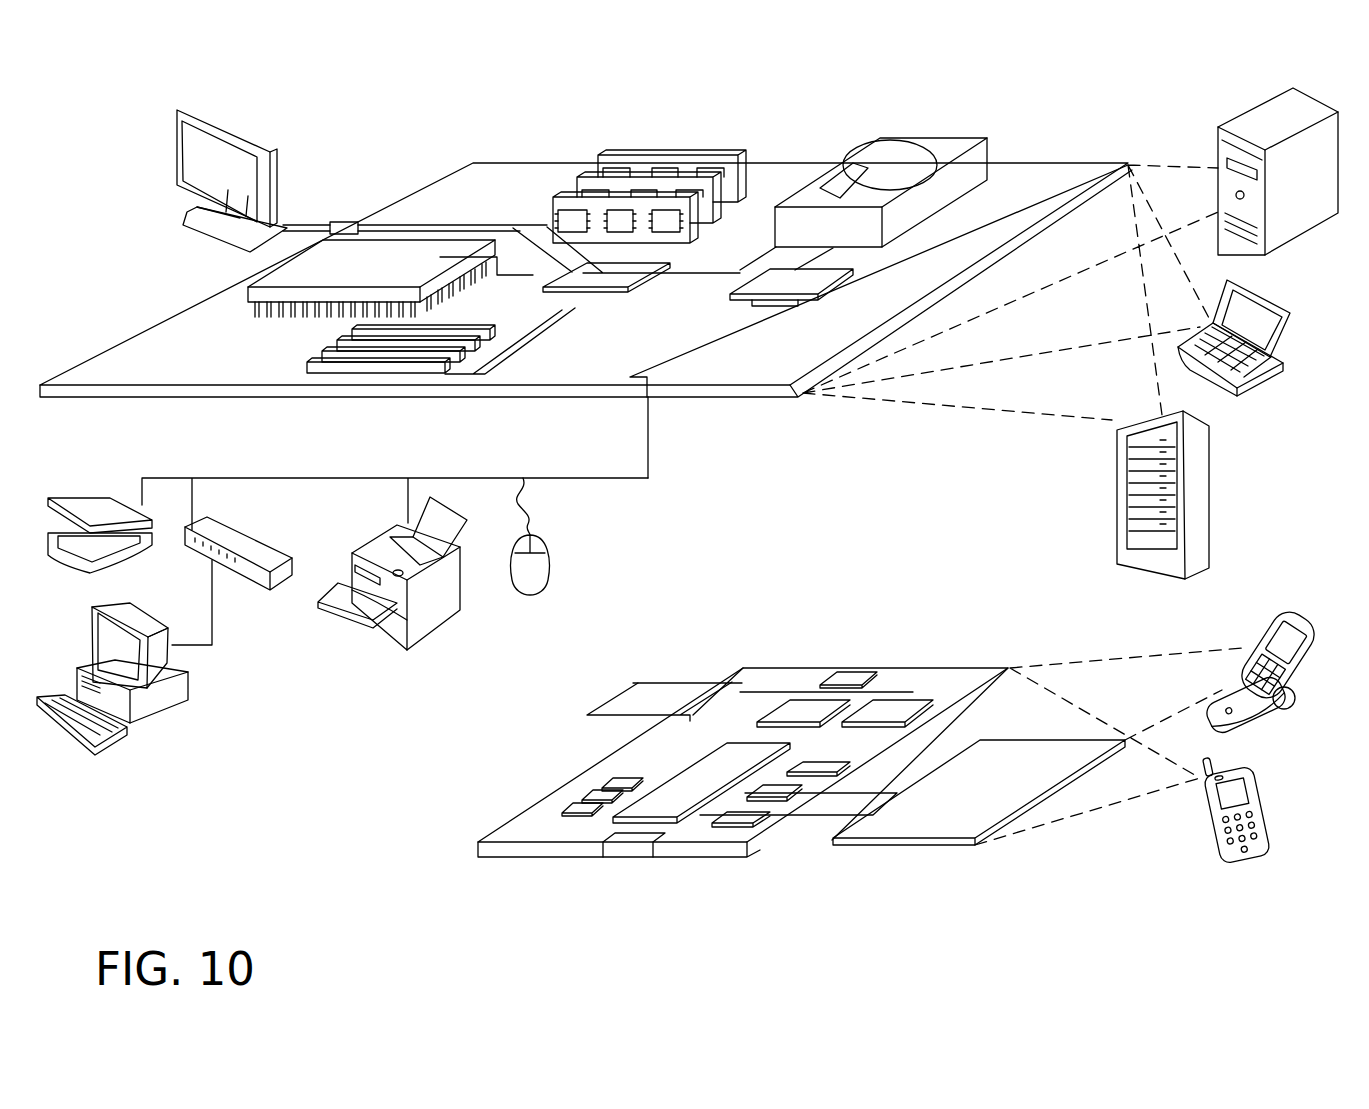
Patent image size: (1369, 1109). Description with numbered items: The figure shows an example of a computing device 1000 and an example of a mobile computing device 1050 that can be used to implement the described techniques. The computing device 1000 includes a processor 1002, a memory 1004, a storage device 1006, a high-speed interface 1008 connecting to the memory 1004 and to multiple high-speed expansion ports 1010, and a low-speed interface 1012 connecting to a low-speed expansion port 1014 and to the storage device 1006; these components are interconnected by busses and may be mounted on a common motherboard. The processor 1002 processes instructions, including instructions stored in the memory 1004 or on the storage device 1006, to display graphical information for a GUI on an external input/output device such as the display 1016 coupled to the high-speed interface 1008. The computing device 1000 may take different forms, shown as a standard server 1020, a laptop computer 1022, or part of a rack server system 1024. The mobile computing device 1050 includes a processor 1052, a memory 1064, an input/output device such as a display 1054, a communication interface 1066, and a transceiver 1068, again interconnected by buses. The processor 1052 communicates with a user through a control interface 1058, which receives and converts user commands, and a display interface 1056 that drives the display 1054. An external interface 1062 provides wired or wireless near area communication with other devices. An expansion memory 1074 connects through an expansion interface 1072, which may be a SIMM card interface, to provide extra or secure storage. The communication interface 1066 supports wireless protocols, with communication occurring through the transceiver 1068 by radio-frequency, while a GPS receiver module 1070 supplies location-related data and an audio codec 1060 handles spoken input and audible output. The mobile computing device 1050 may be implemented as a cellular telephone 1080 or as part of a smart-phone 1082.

The computing device 1000 is at (392, 135).
The processor 1002 is at (250, 294).
The memory 1004 is at (610, 153).
The storage device 1006 is at (882, 138).
The high-speed interface 1008 is at (583, 273).
The high-speed expansion ports 1010 is at (330, 356).
The low-speed interface 1012 is at (770, 277).
The low-speed expansion port 1014 is at (655, 398).
The display 1016 is at (178, 112).
The standard server 1020 is at (1218, 143).
The laptop computer 1022 is at (1300, 308).
The rack server system 1024 is at (1112, 525).
The mobile computing device 1050 is at (456, 857).
The processor 1052 is at (672, 807).
The display 1054 is at (932, 828).
The display interface 1056 is at (747, 815).
The control interface 1058 is at (783, 790).
The audio codec 1060 is at (812, 768).
The external interface 1062 is at (632, 857).
The memory 1064 is at (565, 797).
The communication interface 1066 is at (803, 708).
The transceiver 1068 is at (887, 708).
The GPS receiver module 1070 is at (857, 670).
The expansion interface 1072 is at (723, 682).
The expansion memory 1074 is at (638, 682).
The cellular telephone 1080 is at (1276, 624).
The smart-phone 1082 is at (1205, 810).